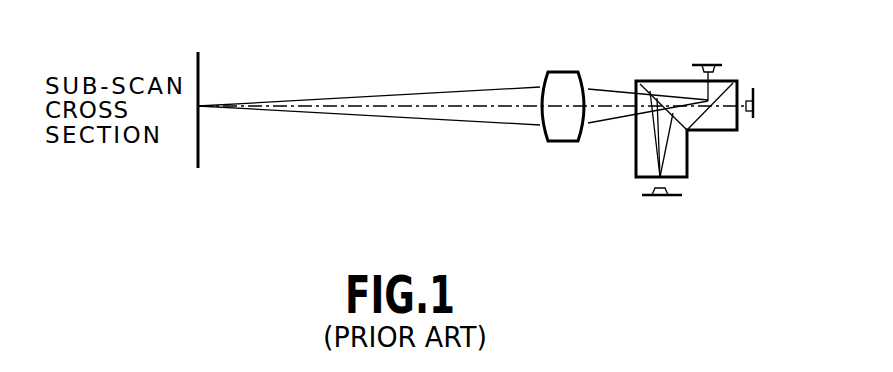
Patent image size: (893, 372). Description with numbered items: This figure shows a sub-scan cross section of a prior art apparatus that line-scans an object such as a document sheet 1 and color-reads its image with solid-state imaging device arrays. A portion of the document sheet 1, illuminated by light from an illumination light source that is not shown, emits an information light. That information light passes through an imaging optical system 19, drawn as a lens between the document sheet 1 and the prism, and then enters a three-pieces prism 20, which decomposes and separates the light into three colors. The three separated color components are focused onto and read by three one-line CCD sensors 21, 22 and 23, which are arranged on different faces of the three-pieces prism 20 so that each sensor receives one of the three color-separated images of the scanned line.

The document sheet 1 is at (200, 72).
The imaging optical system 19 is at (560, 85).
The three-pieces prism 20 is at (680, 157).
The one-line CCD sensor 21 is at (721, 63).
The one-line CCD sensor 22 is at (753, 118).
The one-line CCD sensor 23 is at (673, 198).